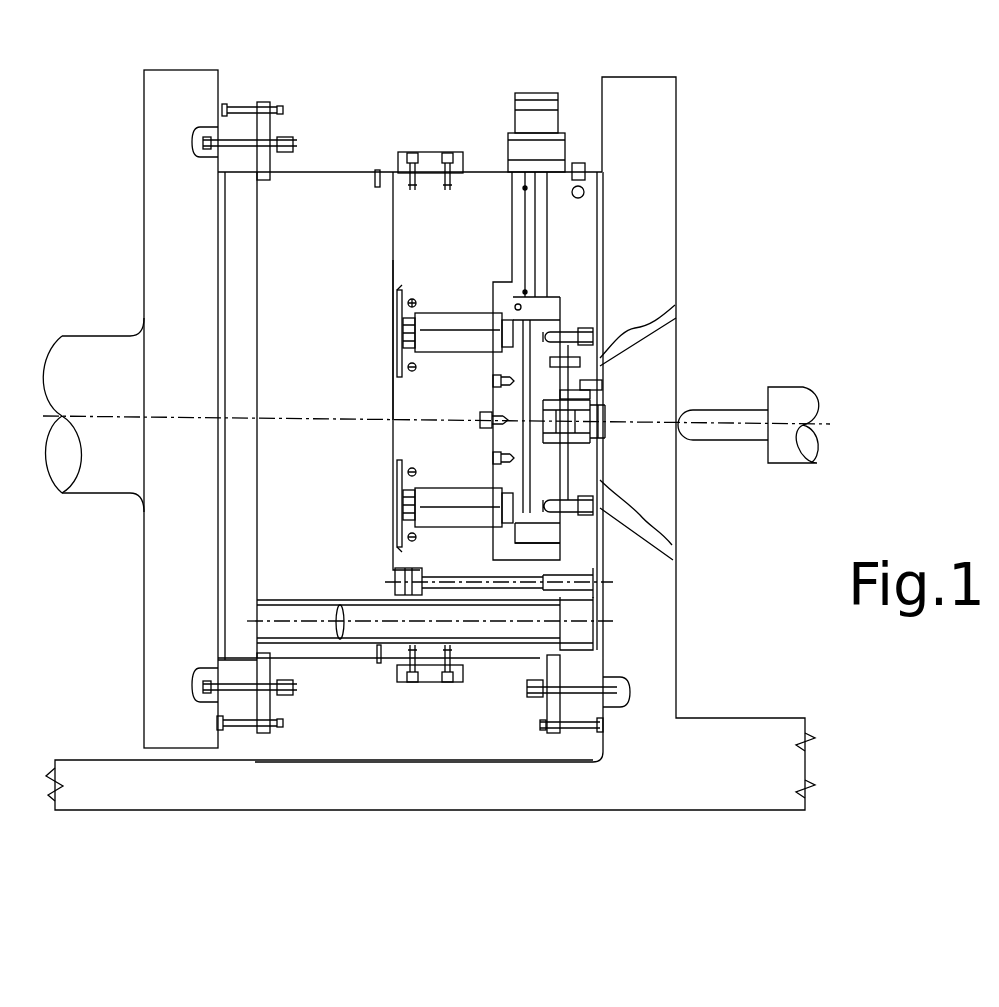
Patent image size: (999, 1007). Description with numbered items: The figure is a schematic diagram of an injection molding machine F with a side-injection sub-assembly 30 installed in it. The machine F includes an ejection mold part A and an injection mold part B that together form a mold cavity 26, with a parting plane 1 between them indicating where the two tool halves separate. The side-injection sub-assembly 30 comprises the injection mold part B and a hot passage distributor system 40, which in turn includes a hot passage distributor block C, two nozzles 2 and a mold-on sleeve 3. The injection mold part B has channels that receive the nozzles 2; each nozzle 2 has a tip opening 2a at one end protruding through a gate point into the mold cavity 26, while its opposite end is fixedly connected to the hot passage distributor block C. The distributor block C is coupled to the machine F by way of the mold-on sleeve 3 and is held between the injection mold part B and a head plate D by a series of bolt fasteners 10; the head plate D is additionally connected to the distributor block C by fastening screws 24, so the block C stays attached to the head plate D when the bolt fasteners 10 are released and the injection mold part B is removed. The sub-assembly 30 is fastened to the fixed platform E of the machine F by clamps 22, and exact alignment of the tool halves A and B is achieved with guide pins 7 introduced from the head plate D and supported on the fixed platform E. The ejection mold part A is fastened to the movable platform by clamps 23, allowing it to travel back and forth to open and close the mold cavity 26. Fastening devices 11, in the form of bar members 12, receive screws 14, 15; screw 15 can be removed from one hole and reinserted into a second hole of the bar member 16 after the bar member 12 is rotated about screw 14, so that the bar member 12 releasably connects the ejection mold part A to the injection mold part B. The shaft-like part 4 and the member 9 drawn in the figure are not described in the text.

The parting plane 1 is at (397, 258).
The nozzle 2 is at (478, 500).
The tip opening 2a is at (404, 490).
The mold-on sleeve 3 is at (603, 408).
The shaft end 4 is at (790, 397).
The guide pin 7 is at (518, 627).
The rotor block 9 is at (153, 587).
The bolt fastener 10 is at (443, 578).
The fastening device 11 is at (398, 150).
The bar member 12 is at (423, 152).
The screw 14 is at (450, 192).
The screw 15 is at (412, 178).
The bar member 16 is at (378, 187).
The clamp 22 is at (550, 730).
The clamp 23 is at (270, 102).
The fastening screw 24 is at (673, 560).
The mold cavity 26 is at (568, 150).
The side-injection sub-assembly 30 is at (392, 287).
The hot passage distributor system 40 is at (563, 547).
The ejection mold part A is at (332, 173).
The injection mold part B is at (475, 180).
The hot passage distributor block C is at (547, 307).
The head plate D is at (587, 250).
The fixed platform E is at (665, 307).
The injection molding machine F is at (712, 712).